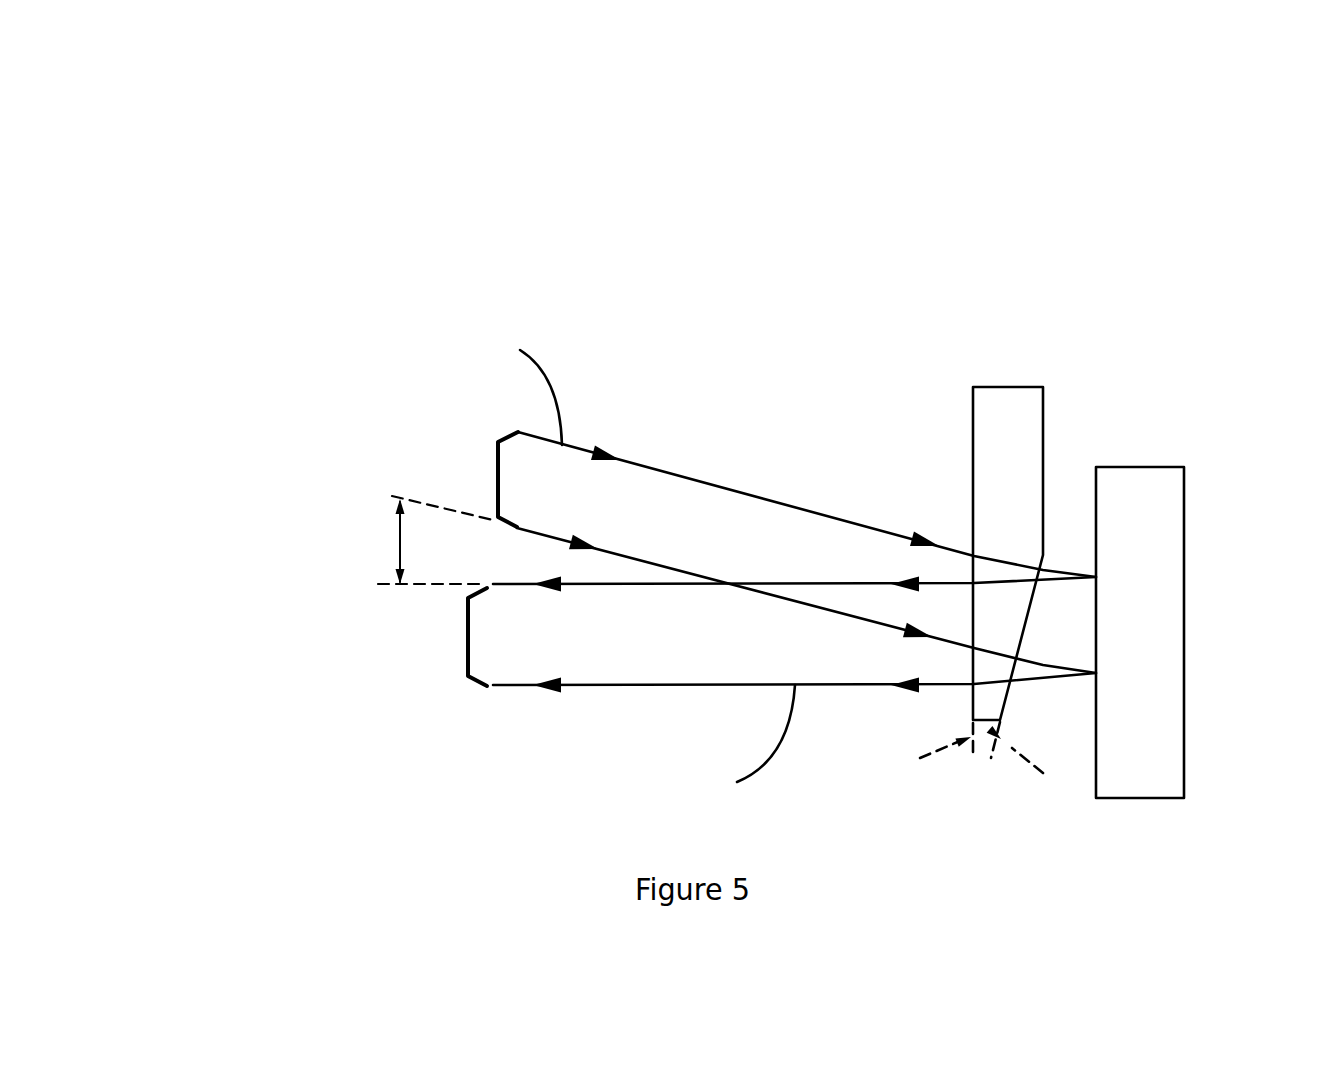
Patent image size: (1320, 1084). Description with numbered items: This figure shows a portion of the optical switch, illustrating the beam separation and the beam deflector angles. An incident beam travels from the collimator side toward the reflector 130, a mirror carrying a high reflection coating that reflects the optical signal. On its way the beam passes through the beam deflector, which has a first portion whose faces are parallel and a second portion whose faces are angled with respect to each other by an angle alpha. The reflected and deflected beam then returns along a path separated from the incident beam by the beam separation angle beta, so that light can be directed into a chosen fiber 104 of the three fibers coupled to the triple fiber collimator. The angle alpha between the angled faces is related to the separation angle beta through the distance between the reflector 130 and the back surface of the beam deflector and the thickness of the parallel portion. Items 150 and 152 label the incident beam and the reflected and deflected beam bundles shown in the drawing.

The fiber 104 is at (1096, 480).
The reflector 130 is at (718, 157).
The incident beam 150 is at (498, 482).
The reflected and deflected beam 152 is at (468, 637).